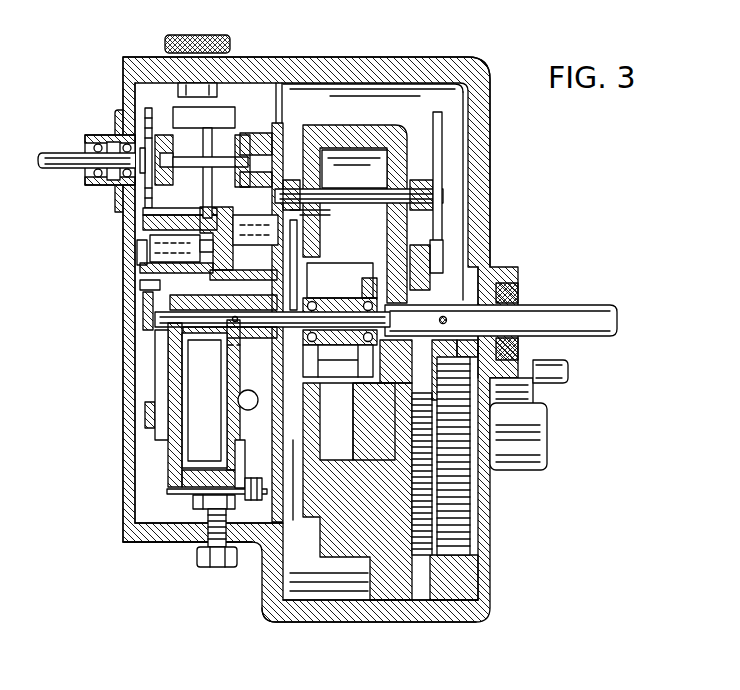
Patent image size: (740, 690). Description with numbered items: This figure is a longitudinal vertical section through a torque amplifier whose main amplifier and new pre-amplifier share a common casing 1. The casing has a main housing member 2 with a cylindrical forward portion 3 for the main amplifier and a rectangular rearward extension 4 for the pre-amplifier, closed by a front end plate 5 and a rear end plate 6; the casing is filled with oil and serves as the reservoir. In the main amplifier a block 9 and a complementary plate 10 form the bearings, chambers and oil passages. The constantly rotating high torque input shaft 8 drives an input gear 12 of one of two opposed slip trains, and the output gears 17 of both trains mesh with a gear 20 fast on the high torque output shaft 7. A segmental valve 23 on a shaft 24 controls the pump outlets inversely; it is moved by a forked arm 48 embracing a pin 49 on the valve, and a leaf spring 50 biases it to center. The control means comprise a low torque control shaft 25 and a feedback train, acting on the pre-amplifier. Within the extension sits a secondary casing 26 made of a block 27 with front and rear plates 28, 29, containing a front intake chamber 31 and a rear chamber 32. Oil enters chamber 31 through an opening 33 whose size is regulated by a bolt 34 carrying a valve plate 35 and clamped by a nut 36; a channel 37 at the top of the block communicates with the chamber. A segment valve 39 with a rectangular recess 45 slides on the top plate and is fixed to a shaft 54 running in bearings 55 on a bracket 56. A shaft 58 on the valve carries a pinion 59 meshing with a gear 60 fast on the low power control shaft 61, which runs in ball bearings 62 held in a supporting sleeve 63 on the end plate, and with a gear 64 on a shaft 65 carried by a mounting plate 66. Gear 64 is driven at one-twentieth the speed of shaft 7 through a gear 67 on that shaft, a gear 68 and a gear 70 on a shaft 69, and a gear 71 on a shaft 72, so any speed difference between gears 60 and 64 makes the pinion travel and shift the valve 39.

The casing 1 is at (116, 479).
The main housing member 2 is at (347, 626).
The generally cylindrical forward portion 3 is at (390, 623).
The generally rectangular rearward extension 4 is at (173, 495).
The front end plate 5 is at (488, 145).
The rear end plate 6 is at (128, 363).
The high torque output shaft 7 is at (590, 312).
The high torque input shaft 8 is at (563, 381).
The block 9 is at (323, 542).
The complementary plate 10 is at (312, 130).
The input gear 12 is at (490, 534).
The output gear 17 is at (490, 485).
The gear 20 is at (420, 247).
The segmental valve 23 is at (347, 380).
The shaft 24 is at (345, 326).
The low torque control shaft 25 is at (262, 338).
The secondary casing 26 is at (156, 479).
The block 27 is at (196, 477).
The front plate 28 is at (283, 140).
The rear plate 29 is at (160, 394).
The front chamber 31 is at (258, 503).
The rear chamber 32 is at (163, 438).
The opening 33 is at (256, 462).
The bolt 34 is at (210, 500).
The valve plate 35 is at (148, 545).
The nut 36 is at (209, 560).
The channel 37 is at (232, 323).
The valve 39 is at (214, 246).
The rectangular recess 45 is at (157, 270).
The forked arm 48 is at (308, 443).
The pin 49 is at (363, 421).
The leaf spring 50 is at (162, 378).
The shaft 54 is at (172, 132).
The bearings 55 is at (240, 150).
The bracket 56 is at (162, 133).
The shaft 58 is at (190, 222).
The pinion 59 is at (137, 246).
The gear 60 is at (148, 108).
The low power control shaft 61 is at (72, 168).
The ball bearings 62 is at (115, 136).
The supporting sleeve 63 is at (115, 186).
The gear 64 is at (152, 331).
The shaft 65 is at (125, 291).
The mounting plate 66 is at (157, 287).
The gear 67 is at (440, 280).
The gear 68 is at (443, 253).
The shaft 69 is at (358, 198).
The gear 70 is at (305, 186).
The gear 71 is at (305, 245).
The shaft 72 is at (231, 246).